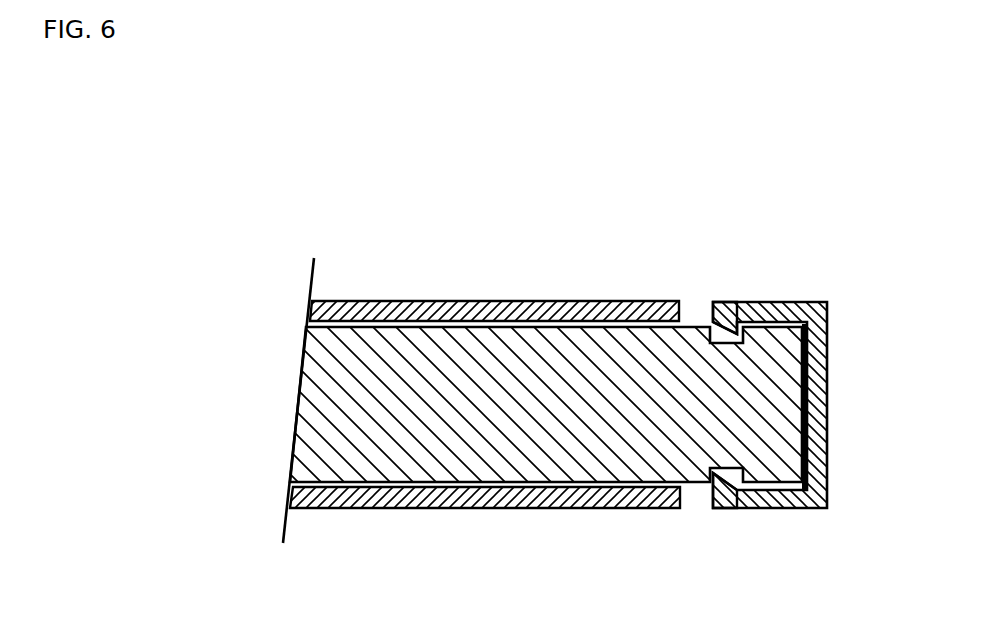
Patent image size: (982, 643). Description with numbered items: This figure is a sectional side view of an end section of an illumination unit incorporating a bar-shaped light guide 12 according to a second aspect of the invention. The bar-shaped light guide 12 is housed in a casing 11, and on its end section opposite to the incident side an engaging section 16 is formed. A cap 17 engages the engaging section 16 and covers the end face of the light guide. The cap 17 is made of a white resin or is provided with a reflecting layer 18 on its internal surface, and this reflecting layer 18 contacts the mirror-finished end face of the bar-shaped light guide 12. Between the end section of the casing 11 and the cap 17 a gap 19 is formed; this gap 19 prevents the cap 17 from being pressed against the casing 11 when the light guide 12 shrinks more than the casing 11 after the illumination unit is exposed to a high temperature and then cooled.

The casing 11 is at (452, 301).
The bar-shaped light guide 12 is at (510, 418).
The engaging section 16 is at (735, 480).
The cap 17 is at (810, 348).
The reflecting layer 18 is at (780, 424).
The gap 19 is at (693, 305).